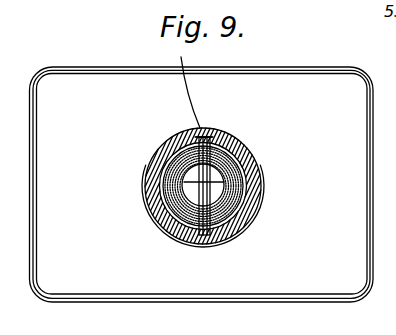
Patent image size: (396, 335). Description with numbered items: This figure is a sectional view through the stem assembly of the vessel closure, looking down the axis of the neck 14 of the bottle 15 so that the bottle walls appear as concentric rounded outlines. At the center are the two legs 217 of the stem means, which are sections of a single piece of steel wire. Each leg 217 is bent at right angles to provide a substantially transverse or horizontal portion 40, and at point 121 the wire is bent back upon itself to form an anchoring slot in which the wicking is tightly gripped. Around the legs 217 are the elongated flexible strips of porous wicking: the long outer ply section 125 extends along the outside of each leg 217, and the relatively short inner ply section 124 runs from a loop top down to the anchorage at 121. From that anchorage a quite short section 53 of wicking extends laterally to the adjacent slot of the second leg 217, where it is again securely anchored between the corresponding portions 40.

The neck 14 is at (243, 151).
The bottle 15 is at (313, 55).
The transverse portion 40 is at (163, 184).
The short section of wicking 53 is at (203, 244).
The anchorage point 121 is at (187, 243).
The inner ply section 124 is at (160, 162).
The outer ply section 125 is at (162, 218).
The leg 217 is at (208, 134).